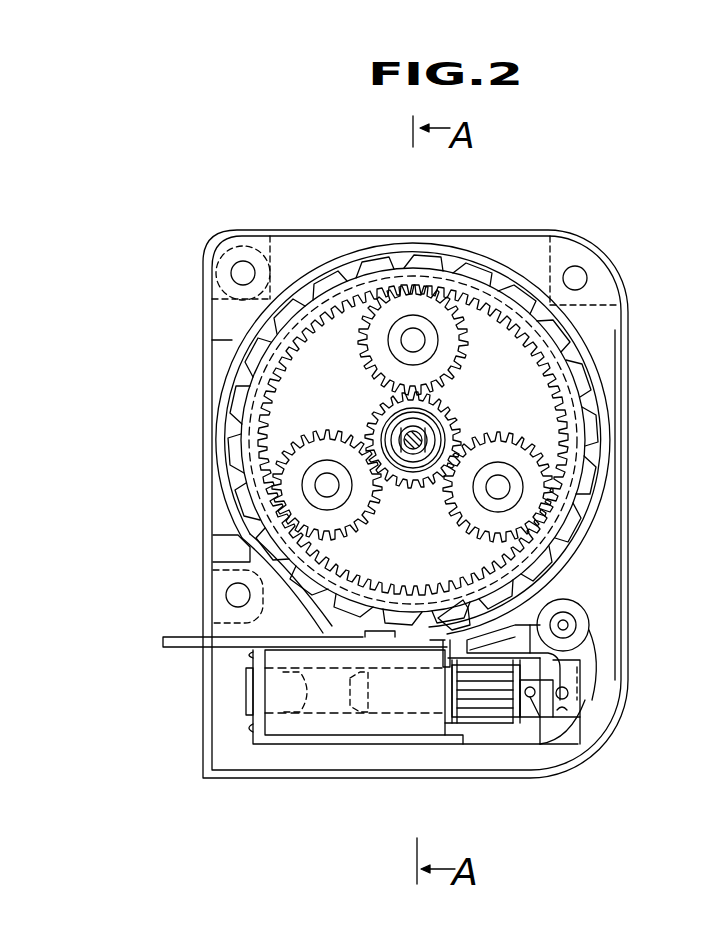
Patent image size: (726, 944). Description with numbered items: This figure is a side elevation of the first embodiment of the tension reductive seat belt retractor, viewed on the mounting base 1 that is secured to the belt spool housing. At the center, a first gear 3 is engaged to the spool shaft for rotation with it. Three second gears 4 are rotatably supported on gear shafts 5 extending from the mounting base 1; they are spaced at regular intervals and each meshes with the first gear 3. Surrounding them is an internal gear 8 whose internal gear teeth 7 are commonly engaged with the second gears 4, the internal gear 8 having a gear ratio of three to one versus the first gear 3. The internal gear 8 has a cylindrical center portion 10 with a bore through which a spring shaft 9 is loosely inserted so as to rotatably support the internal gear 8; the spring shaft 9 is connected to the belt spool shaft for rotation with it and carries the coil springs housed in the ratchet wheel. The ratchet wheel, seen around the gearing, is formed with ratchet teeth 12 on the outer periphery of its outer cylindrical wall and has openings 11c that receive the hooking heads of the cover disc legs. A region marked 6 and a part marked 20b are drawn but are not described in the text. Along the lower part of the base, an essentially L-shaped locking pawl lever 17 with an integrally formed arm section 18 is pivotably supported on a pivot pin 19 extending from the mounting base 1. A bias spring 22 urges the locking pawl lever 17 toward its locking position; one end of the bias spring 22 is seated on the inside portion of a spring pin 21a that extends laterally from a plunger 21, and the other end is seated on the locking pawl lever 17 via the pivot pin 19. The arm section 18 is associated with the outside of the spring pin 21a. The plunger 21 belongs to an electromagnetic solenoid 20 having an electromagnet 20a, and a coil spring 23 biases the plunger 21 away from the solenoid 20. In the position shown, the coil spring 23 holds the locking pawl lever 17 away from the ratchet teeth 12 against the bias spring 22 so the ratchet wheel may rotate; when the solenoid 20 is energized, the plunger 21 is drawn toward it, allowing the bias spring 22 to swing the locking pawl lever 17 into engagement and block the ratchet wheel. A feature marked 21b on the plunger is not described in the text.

The mounting base 1 is at (538, 236).
The first gear 3 is at (440, 410).
The second gears 4 is at (333, 433).
The gear shafts 5 is at (315, 485).
The carrier 6 is at (375, 515).
The internal gear teeth 7 is at (413, 440).
The internal gear 8 is at (268, 370).
The spring shaft 9 is at (447, 430).
The cylindrical center portion 10 is at (446, 432).
The openings 11c is at (446, 262).
The ratchet teeth 12 is at (597, 462).
The locking pawl lever 17 is at (478, 722).
The arm section 18 is at (582, 658).
The pivot pin 19 is at (578, 623).
The electromagnetic solenoid 20 is at (288, 735).
The electromagnet 20a is at (313, 713).
The motor mounting plate 20b is at (180, 647).
The plunger 21 is at (592, 747).
The spring pin 21a is at (569, 694).
The bracket slot 21b is at (548, 725).
The bias spring 22 is at (545, 600).
The coil spring 23 is at (525, 722).